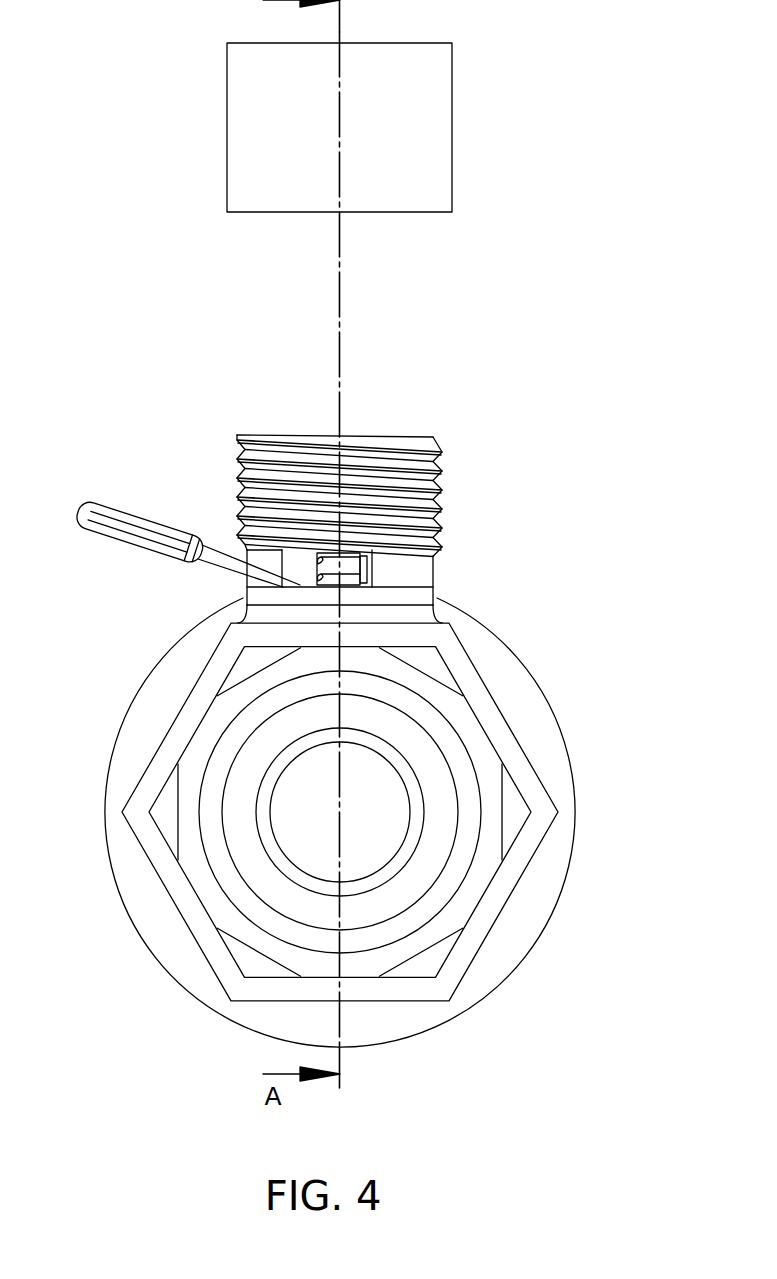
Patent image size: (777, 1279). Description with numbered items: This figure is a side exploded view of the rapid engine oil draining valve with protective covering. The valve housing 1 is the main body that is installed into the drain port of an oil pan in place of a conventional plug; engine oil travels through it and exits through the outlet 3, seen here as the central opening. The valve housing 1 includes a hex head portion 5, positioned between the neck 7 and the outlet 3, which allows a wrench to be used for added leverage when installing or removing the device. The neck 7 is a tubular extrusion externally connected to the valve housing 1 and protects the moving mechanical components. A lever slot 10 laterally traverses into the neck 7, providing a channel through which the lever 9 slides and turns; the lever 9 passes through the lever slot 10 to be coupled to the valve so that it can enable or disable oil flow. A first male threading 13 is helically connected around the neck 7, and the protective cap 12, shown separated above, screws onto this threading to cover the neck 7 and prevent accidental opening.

The valve housing 1 is at (72, 758).
The outlet 3 is at (362, 826).
The hex head portion 5 is at (442, 950).
The neck 7 is at (425, 567).
The lever 9 is at (92, 502).
The lever slot 10 is at (258, 560).
The protective cap 12 is at (423, 50).
The first male threading 13 is at (437, 448).